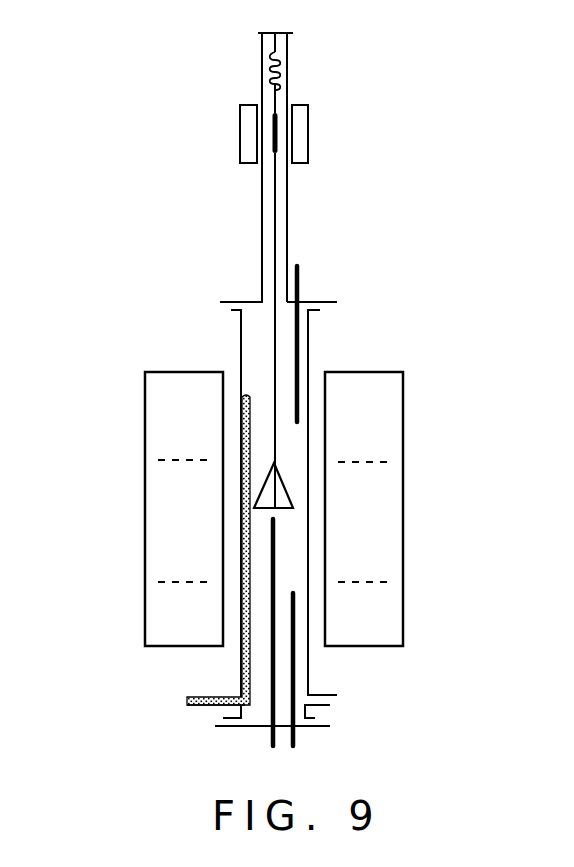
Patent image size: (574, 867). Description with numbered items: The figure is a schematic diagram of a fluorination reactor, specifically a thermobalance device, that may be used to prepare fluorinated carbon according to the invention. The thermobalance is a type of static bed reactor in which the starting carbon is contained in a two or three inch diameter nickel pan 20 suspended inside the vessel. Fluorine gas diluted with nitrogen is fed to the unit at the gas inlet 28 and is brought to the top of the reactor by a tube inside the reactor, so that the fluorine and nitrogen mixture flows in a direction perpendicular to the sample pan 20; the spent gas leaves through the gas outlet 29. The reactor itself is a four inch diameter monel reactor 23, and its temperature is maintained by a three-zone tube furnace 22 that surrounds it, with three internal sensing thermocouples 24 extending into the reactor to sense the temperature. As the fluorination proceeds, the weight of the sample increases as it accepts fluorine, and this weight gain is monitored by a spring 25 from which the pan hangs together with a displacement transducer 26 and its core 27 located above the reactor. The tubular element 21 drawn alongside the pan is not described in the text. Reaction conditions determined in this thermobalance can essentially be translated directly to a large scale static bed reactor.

The nickel pan 20 is at (288, 483).
The tubular electrode 21 is at (244, 405).
The three-zone tube furnace 22 is at (197, 548).
The monel reactor 23 is at (303, 362).
The internal sensing thermocouples 24 is at (297, 283).
The spring 25 is at (271, 57).
The displacement transducer 26 is at (315, 134).
The core 27 is at (269, 138).
The gas inlet 28 is at (184, 699).
The gas outlet 29 is at (340, 700).